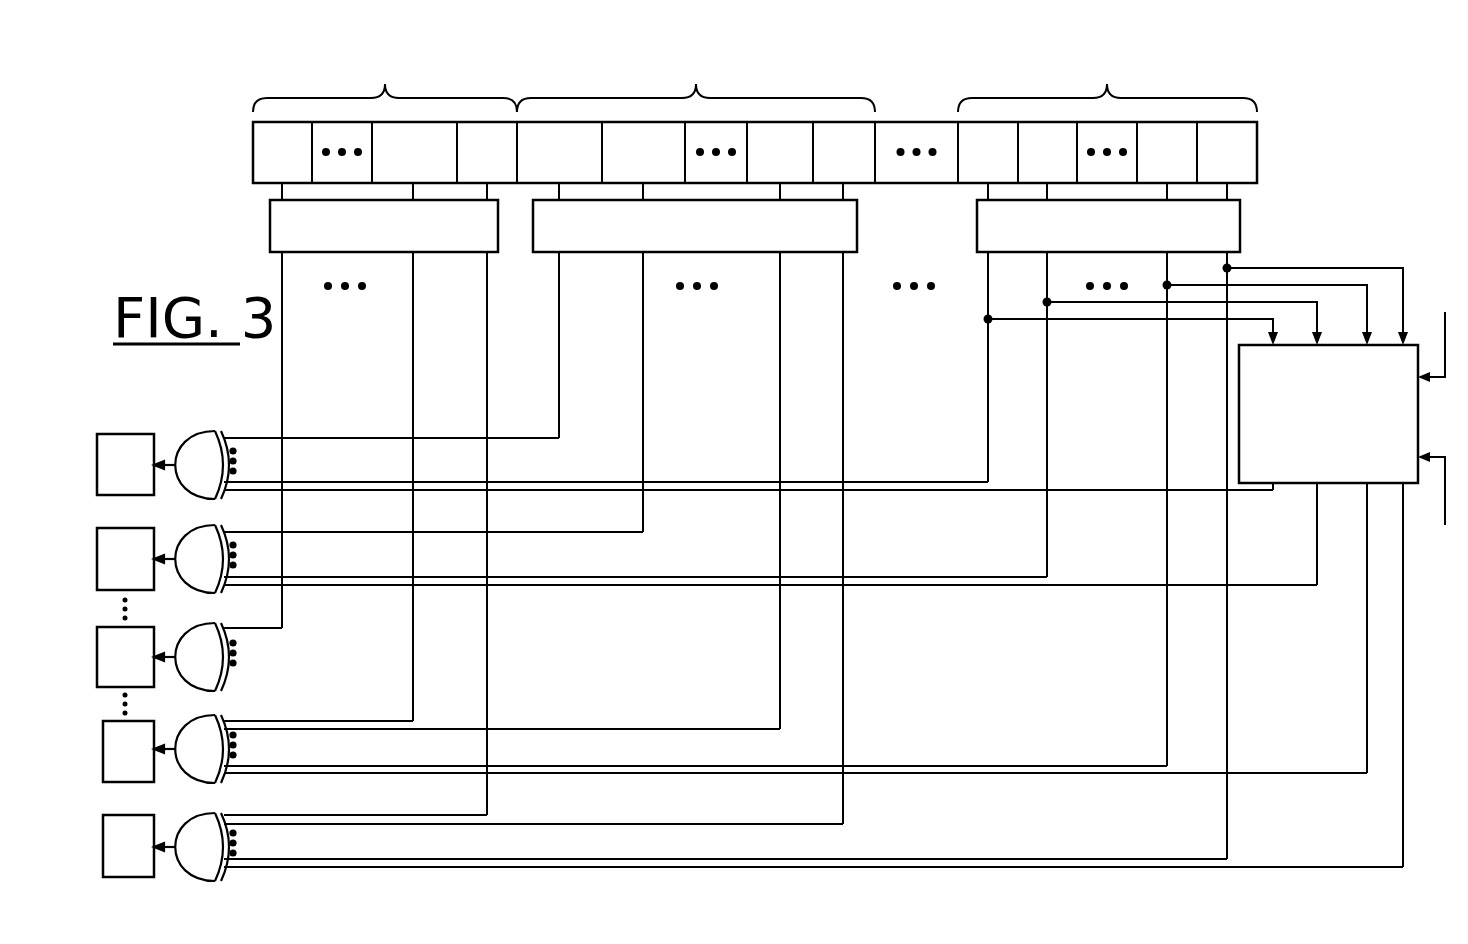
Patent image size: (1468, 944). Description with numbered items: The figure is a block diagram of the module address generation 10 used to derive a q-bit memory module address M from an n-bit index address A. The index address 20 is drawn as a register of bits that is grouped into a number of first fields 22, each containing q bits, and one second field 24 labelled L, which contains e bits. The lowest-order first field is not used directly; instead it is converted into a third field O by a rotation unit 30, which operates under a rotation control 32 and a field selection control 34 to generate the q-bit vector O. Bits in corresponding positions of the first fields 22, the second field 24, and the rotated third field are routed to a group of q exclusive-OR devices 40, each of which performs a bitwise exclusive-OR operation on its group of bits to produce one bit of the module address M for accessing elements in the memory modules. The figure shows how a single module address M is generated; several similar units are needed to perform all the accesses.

The module address generation 10 is at (1352, 114).
The index address 20 is at (1257, 150).
The first field 22 is at (1247, 226).
The second field 24 is at (268, 224).
The rotation unit 30 is at (1328, 484).
The rotation control 32 is at (1445, 332).
The field selection control 34 is at (1445, 505).
The exclusive-OR device 40 is at (199, 893).